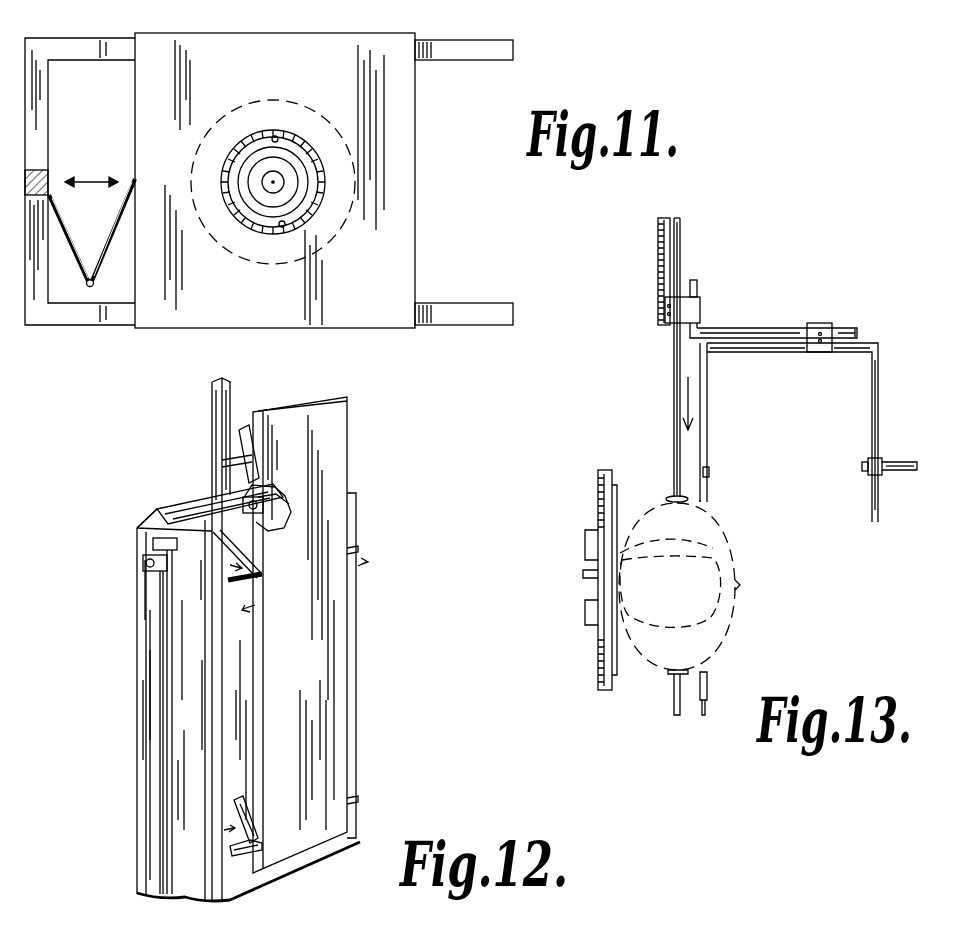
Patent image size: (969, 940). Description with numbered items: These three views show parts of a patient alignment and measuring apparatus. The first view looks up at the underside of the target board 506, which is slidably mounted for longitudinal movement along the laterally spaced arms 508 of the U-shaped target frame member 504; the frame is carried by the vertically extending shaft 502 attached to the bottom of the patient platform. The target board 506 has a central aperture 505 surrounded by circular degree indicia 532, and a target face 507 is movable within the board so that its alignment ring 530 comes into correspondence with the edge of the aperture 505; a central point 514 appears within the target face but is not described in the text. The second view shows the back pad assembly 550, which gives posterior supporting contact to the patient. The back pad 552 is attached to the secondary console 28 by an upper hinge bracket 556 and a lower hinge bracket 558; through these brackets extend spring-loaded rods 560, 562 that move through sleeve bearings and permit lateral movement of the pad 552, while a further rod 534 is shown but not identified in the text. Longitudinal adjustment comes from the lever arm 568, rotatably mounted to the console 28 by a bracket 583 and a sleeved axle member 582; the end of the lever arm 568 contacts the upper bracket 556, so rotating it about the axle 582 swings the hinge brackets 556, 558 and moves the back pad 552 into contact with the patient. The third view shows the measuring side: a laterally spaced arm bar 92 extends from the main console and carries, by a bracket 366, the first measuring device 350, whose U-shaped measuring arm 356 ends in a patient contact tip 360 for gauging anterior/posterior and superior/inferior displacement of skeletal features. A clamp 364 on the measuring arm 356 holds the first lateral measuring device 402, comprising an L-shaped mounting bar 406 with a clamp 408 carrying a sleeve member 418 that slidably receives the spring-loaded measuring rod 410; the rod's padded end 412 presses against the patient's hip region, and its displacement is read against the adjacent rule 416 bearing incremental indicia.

In FIG. 11, the U-shaped target frame member 504 is at (84, 340).
In FIG. 11, the target board 506 is at (410, 237).
In FIG. 11, the laterally spaced arms 508 is at (445, 43).
In FIG. 11, the central aperture 505 is at (276, 130).
In FIG. 11, the circular degree indicia 532 is at (308, 170).
In FIG. 11, the target face 507 is at (300, 208).
In FIG. 11, the alignment ring 530 is at (290, 205).
In FIG. 11, the central shaft 514 is at (270, 190).
In FIG. 12, the back pad assembly 550 is at (388, 458).
In FIG. 12, the back pad 552 is at (350, 648).
In FIG. 13, the back pad 552 is at (620, 668).
In FIG. 12, the vertically extending shaft 502 is at (212, 418).
In FIG. 12, the lever arm 568 is at (244, 428).
In FIG. 12, the bracket 583 is at (217, 492).
In FIG. 12, the axle member 582 is at (284, 515).
In FIG. 12, the upper hinge bracket 556 is at (225, 560).
In FIG. 12, the spring-loaded rod 560 is at (215, 618).
In FIG. 12, the guide rod 534 is at (158, 588).
In FIG. 12, the secondary console 28 is at (148, 676).
In FIG. 12, the lower hinge bracket 558 is at (246, 795).
In FIG. 12, the spring-loaded rod 562 is at (230, 850).
In FIG. 13, the first lateral measuring device 402 is at (645, 389).
In FIG. 13, the rule 416 is at (658, 243).
In FIG. 13, the measuring rod 410 is at (684, 229).
In FIG. 13, the sleeve member 418 is at (684, 275).
In FIG. 13, the clamp 408 is at (702, 300).
In FIG. 13, the L-shaped mounting bar 406 is at (740, 332).
In FIG. 13, the clamp 364 is at (828, 323).
In FIG. 13, the U-shaped measuring arm 356 is at (848, 355).
In FIG. 13, the patient contact tip 360 is at (710, 495).
In FIG. 13, the first measuring device 350 is at (730, 470).
In FIG. 13, the patient contact padded end 412 is at (668, 497).
In FIG. 13, the bracket 366 is at (868, 472).
In FIG. 13, the arm bar 92 is at (898, 461).